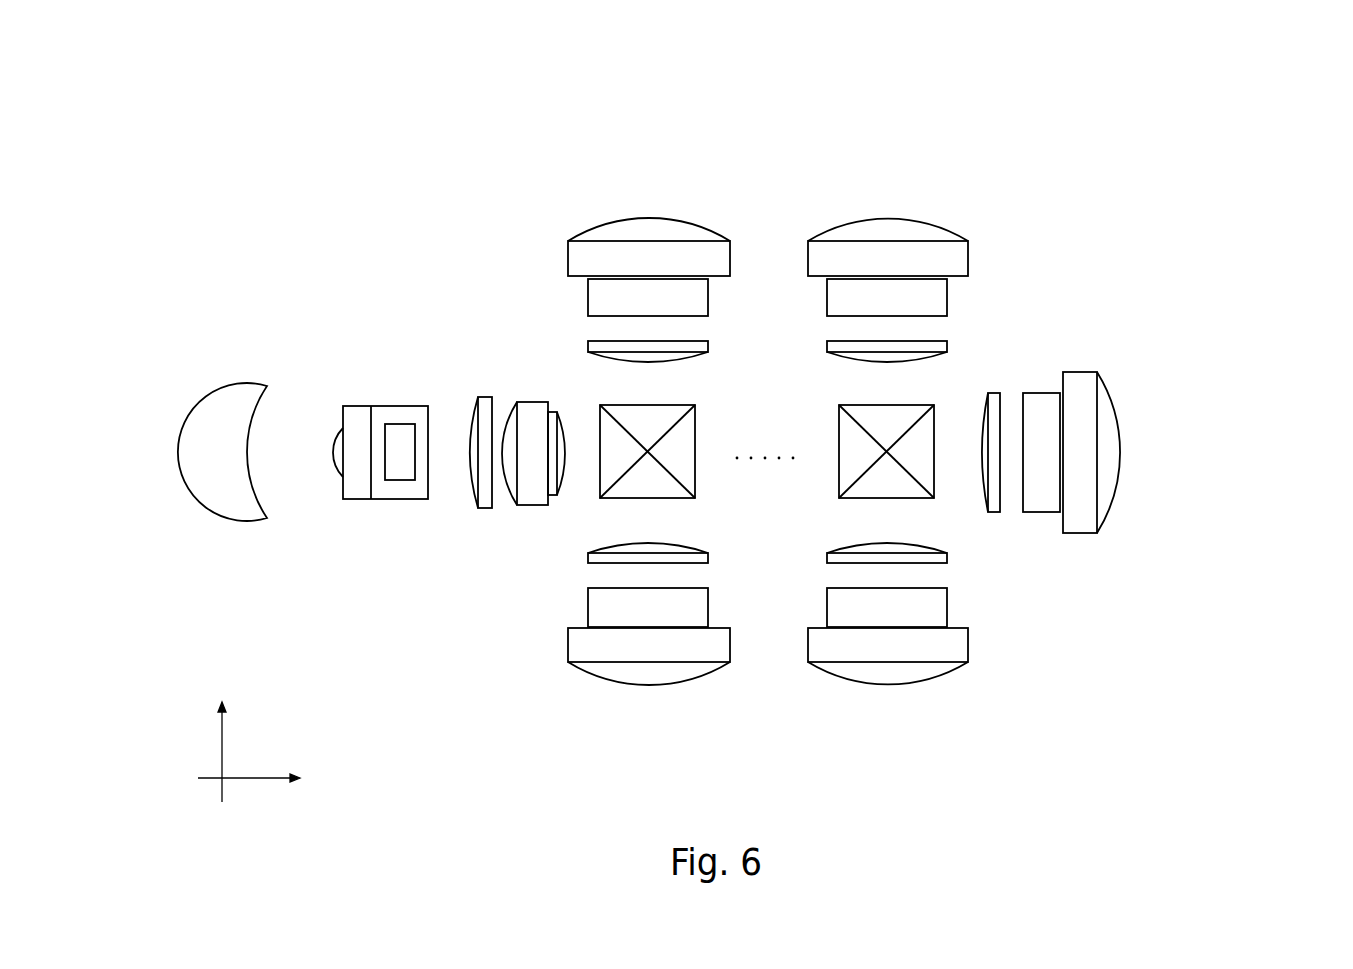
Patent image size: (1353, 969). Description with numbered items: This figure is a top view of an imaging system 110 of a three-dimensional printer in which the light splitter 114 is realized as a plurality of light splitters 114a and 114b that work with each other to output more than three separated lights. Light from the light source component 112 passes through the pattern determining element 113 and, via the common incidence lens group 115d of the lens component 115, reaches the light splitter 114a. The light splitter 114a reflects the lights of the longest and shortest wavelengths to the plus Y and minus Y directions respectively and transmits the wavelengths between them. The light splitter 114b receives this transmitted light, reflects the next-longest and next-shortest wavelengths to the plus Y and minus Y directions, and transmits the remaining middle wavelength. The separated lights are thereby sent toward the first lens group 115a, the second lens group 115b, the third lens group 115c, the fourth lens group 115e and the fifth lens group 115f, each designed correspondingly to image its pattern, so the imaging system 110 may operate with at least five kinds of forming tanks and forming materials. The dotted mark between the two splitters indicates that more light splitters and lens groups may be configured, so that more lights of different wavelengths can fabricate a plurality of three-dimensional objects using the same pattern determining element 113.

The imaging system 110 is at (235, 92).
The light source component 112 is at (237, 405).
The pattern determining element 113 is at (390, 413).
The light splitter 114 is at (487, 522).
The light splitter 114a is at (605, 487).
The light splitter 114b is at (847, 477).
The lens component 115 is at (1218, 302).
The first lens group 115a is at (678, 258).
The second lens group 115b is at (1108, 425).
The third lens group 115c is at (680, 647).
The common incidence lens group 115d is at (533, 470).
The fourth lens group 115e is at (923, 260).
The fifth lens group 115f is at (948, 643).